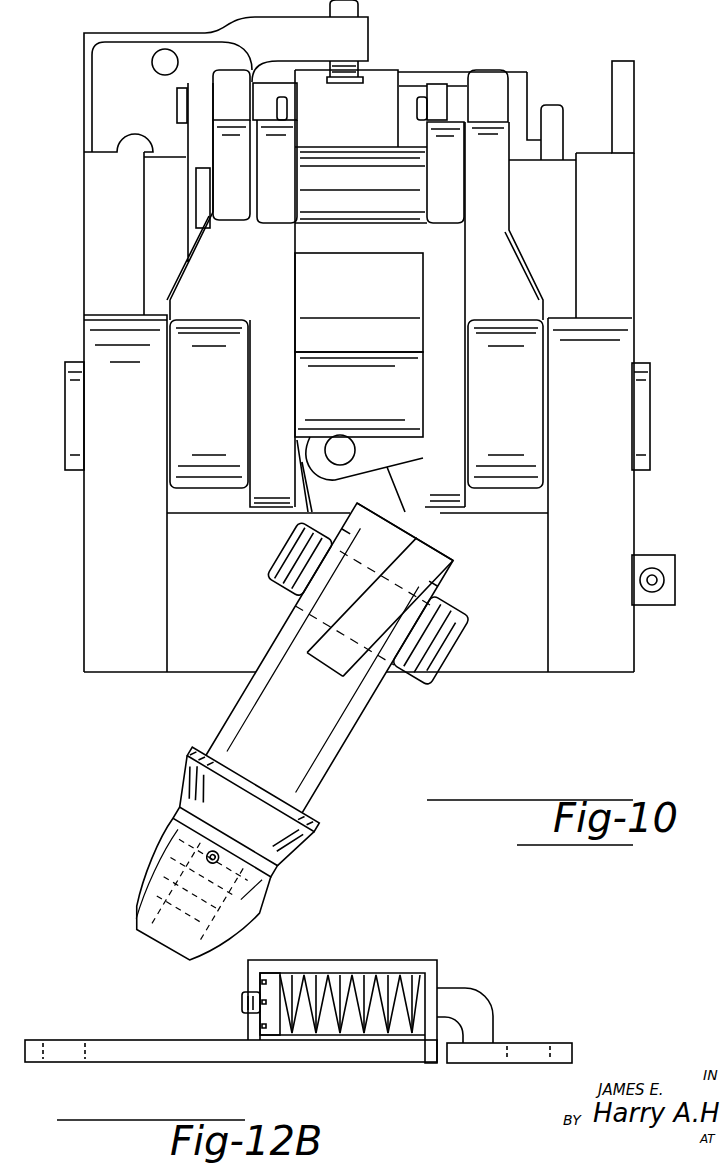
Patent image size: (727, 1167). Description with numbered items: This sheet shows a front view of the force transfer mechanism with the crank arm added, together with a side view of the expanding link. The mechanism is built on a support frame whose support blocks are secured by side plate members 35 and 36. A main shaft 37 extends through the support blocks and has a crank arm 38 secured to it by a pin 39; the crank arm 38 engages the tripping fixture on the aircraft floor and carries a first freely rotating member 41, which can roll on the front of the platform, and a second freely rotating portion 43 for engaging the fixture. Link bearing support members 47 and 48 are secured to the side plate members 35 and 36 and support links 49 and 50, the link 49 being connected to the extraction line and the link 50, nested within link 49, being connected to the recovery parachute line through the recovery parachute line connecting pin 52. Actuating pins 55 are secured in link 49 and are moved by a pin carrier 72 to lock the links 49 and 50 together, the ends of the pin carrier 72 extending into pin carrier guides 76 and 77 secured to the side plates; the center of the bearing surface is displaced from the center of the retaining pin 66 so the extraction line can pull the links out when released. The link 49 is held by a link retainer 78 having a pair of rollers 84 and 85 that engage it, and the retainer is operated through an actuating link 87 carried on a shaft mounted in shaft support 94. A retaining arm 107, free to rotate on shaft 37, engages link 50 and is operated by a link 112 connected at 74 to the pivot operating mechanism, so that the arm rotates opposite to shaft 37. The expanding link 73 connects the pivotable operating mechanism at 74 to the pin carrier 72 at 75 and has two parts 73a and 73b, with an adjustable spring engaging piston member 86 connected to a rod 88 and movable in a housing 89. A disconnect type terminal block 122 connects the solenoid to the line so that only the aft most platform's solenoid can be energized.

In FIG. 10, the side plate member 35 is at (634, 626).
In FIG. 10, the side plate member 36 is at (84, 602).
In FIG. 10, the main shaft 37 is at (424, 530).
In FIG. 10, the crank arm 38 is at (338, 768).
In FIG. 10, the pin 39 is at (440, 620).
In FIG. 10, the first freely rotating member 41 is at (196, 752).
In FIG. 10, the second freely rotating portion 43 is at (150, 856).
In FIG. 10, the link bearing support member 47 is at (509, 490).
In FIG. 10, the link bearing support member 48 is at (207, 494).
In FIG. 10, the link 49 is at (505, 200).
In FIG. 10, the link 50 is at (441, 212).
In FIG. 10, the recovery parachute line connecting pin 52 is at (418, 186).
In FIG. 10, the actuating pin 55 is at (198, 208).
In FIG. 10, the retaining pin 66 is at (408, 402).
In FIG. 10, the pin carrier 72 is at (152, 214).
In FIG. 10, the pin carrier guide 76 is at (626, 216).
In FIG. 10, the pin carrier guide 77 is at (96, 202).
In FIG. 10, the link retainer 78 is at (438, 92).
In FIG. 10, the roller 84 is at (490, 75).
In FIG. 10, the roller 85 is at (236, 82).
In FIG. 10, the actuating link 87 is at (375, 93).
In FIG. 10, the shaft support 94 is at (632, 105).
In FIG. 10, the retaining arm 107 is at (338, 352).
In FIG. 10, the link 112 is at (366, 446).
In FIG. 10, the terminal block 122 is at (665, 555).
In FIG. 12B, the expanding link 73 is at (364, 956).
In FIG. 12B, the link part 73a is at (574, 1052).
In FIG. 12B, the link part 73b is at (133, 1063).
In FIG. 12B, the connection point 74 is at (527, 1043).
In FIG. 12B, the connection point 75 is at (62, 1041).
In FIG. 12B, the adjustable spring engaging piston member 86 is at (272, 976).
In FIG. 12B, the rod 88 is at (462, 988).
In FIG. 12B, the housing 89 is at (415, 962).